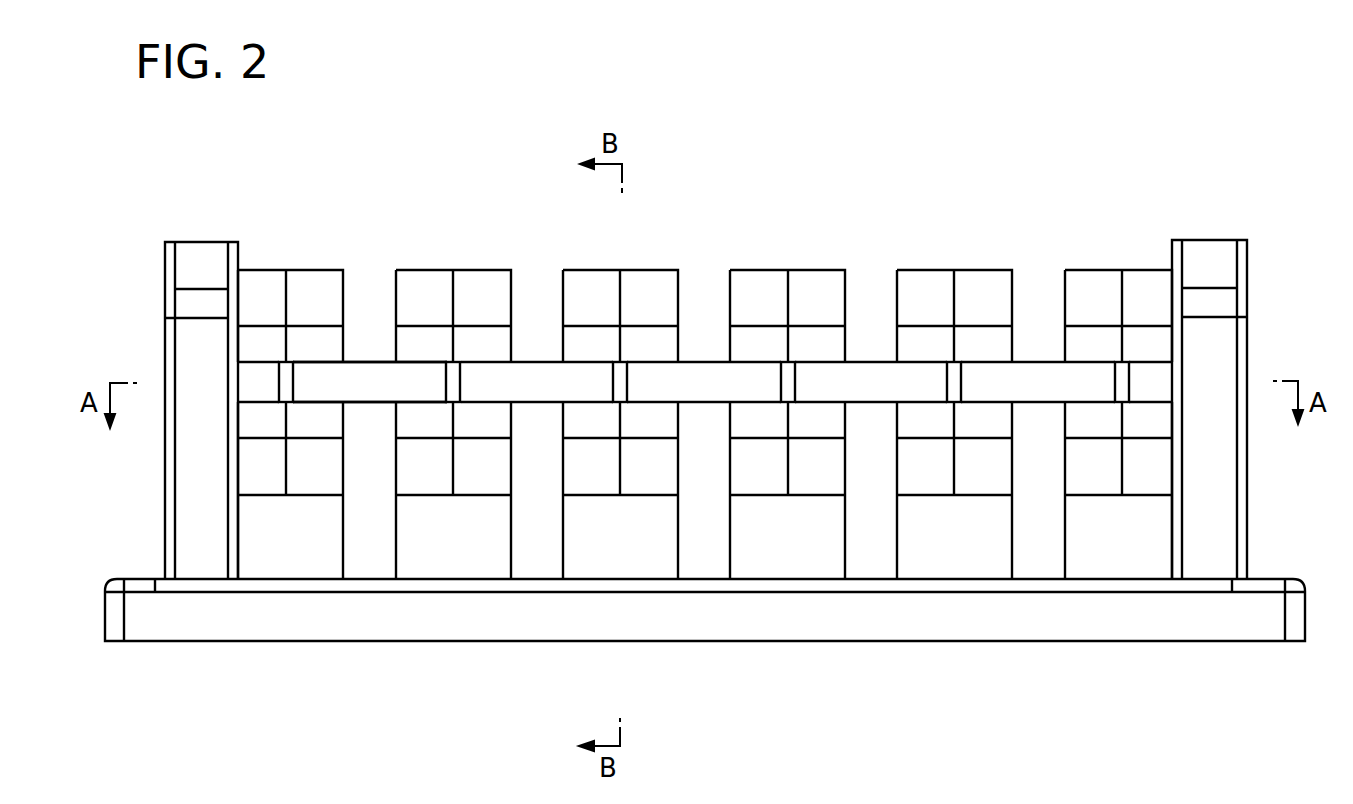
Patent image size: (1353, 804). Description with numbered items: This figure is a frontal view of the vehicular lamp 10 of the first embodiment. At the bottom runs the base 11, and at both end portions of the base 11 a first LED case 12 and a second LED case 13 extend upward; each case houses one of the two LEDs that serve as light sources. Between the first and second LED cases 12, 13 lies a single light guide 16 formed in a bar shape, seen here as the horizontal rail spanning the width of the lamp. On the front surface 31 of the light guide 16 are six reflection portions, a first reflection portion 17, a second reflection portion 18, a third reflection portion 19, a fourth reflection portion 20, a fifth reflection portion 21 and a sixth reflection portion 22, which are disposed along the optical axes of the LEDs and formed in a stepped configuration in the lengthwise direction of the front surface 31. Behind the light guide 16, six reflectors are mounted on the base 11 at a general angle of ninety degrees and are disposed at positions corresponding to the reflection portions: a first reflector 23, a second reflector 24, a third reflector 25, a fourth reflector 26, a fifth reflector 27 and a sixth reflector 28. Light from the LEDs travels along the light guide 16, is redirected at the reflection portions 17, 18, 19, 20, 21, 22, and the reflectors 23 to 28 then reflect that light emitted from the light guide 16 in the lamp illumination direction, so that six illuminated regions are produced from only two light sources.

The vehicular lamp 10 is at (1040, 137).
The base 11 is at (185, 625).
The first LED case 12 is at (182, 241).
The second LED case 13 is at (1230, 240).
The light guide 16 is at (700, 360).
The first reflection portion 17 is at (287, 382).
The second reflection portion 18 is at (454, 382).
The third reflection portion 19 is at (621, 382).
The fourth reflection portion 20 is at (1123, 382).
The fifth reflection portion 21 is at (955, 382).
The sixth reflection portion 22 is at (789, 382).
The first reflector 23 is at (312, 269).
The second reflector 24 is at (481, 269).
The third reflector 25 is at (590, 269).
The fourth reflector 26 is at (1095, 269).
The fifth reflector 27 is at (925, 269).
The sixth reflector 28 is at (813, 269).
The front surface 31 is at (372, 377).